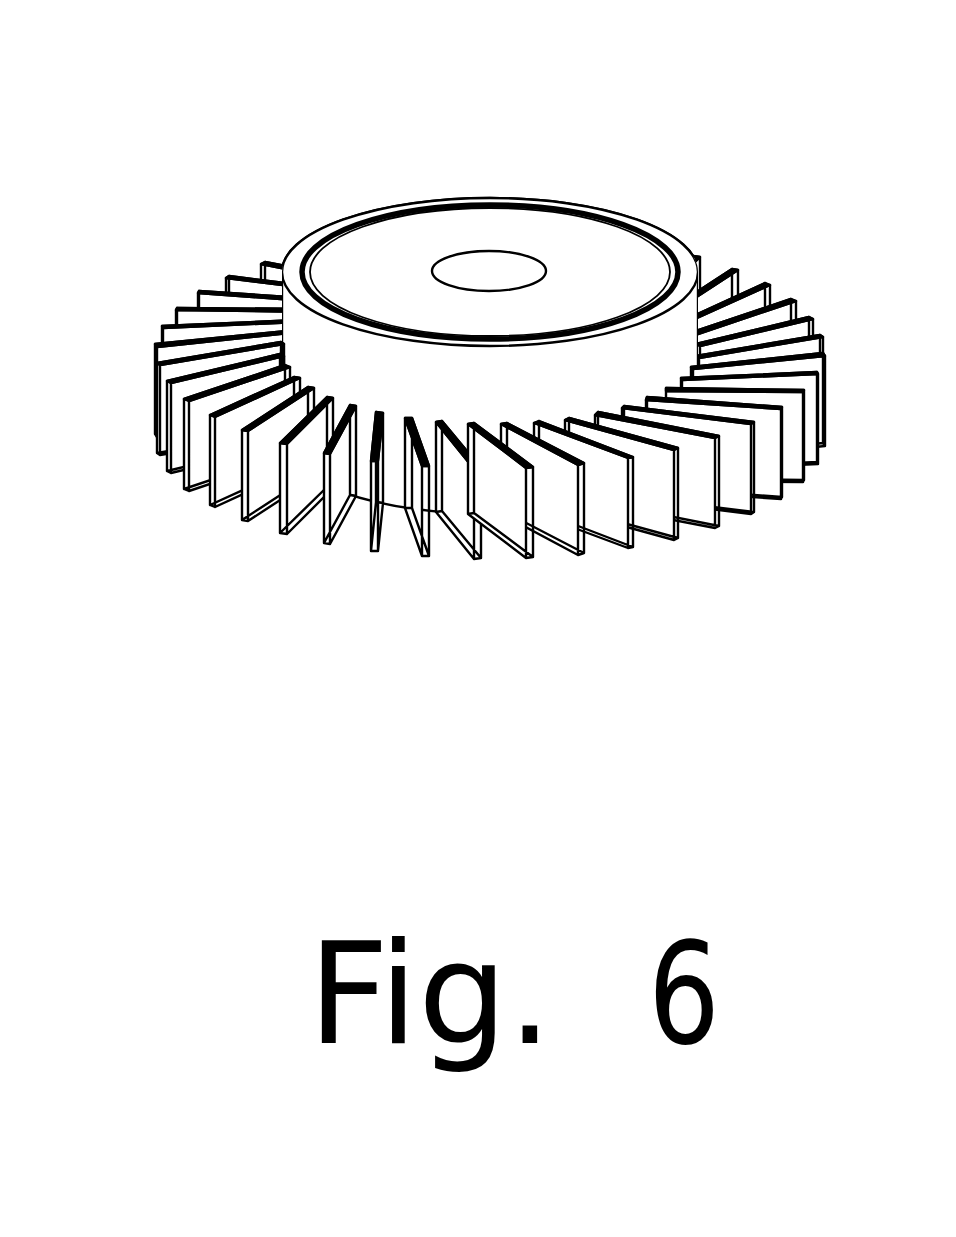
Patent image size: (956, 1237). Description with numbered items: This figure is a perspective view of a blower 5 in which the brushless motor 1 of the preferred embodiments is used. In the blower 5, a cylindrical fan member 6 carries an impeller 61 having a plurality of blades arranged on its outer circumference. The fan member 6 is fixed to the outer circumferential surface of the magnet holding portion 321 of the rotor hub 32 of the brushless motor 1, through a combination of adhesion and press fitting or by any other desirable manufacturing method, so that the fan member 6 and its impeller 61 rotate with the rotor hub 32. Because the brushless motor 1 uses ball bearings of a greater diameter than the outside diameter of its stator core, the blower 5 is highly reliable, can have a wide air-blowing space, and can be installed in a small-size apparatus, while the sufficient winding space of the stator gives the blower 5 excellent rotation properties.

The blower 5 is at (106, 58).
The brushless motor 1 is at (432, 224).
The rotor hub 32 is at (583, 272).
The magnet holding portion 321 is at (311, 258).
The cylindrical fan member 6 is at (490, 444).
The impeller 61 is at (332, 463).